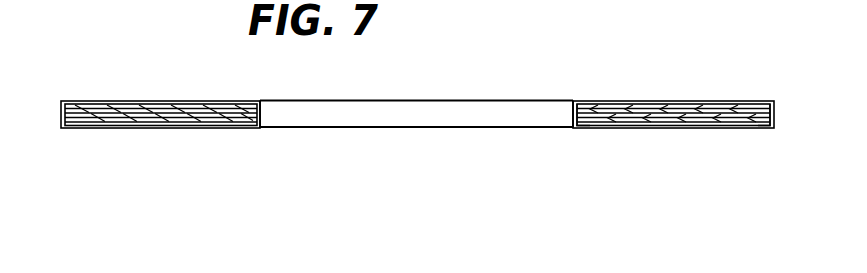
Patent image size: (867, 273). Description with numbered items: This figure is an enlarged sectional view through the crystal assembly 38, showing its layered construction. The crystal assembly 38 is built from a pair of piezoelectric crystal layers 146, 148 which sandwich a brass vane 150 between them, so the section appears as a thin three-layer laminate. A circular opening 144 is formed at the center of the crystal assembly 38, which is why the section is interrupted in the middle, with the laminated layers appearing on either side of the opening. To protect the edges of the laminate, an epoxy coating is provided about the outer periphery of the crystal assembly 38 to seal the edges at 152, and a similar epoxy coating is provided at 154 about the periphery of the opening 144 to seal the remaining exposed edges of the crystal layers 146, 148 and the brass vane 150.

The crystal assembly 38 is at (387, 128).
The circular opening 144 is at (497, 118).
The piezoelectric crystal layer 146 is at (678, 105).
The piezoelectric crystal layer 148 is at (692, 116).
The brass vane 150 is at (646, 117).
The epoxy coating 152 is at (756, 127).
The epoxy coating 154 is at (596, 120).